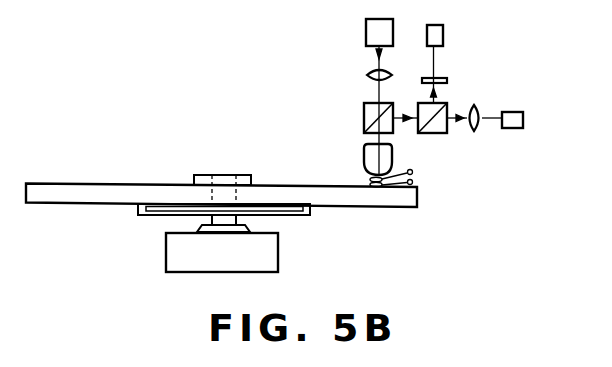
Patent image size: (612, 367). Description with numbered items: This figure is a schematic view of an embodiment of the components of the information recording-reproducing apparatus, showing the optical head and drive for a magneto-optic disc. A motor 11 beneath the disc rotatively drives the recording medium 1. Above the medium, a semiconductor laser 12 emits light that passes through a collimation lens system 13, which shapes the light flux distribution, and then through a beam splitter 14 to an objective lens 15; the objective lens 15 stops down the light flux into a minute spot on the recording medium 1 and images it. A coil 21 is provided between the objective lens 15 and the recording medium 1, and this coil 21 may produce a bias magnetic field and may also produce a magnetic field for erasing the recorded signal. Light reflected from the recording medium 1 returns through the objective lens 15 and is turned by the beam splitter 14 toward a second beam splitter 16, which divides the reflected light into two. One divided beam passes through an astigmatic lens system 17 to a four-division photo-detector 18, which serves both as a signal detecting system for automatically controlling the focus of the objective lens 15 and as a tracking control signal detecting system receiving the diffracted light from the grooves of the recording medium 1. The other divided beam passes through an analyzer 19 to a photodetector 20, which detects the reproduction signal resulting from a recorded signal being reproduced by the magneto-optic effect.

The recording medium 1 is at (46, 189).
The motor 11 is at (278, 250).
The semiconductor laser 12 is at (366, 33).
The collimation lens system 13 is at (367, 77).
The beam splitter 14 is at (364, 117).
The objective lens 15 is at (364, 160).
The beam splitter 16 is at (448, 102).
The astigmatic lens system 17 is at (474, 131).
The four-division photo-detector 18 is at (523, 121).
The analyzer 19 is at (447, 79).
The photodetector 20 is at (443, 30).
The coil 21 is at (414, 182).